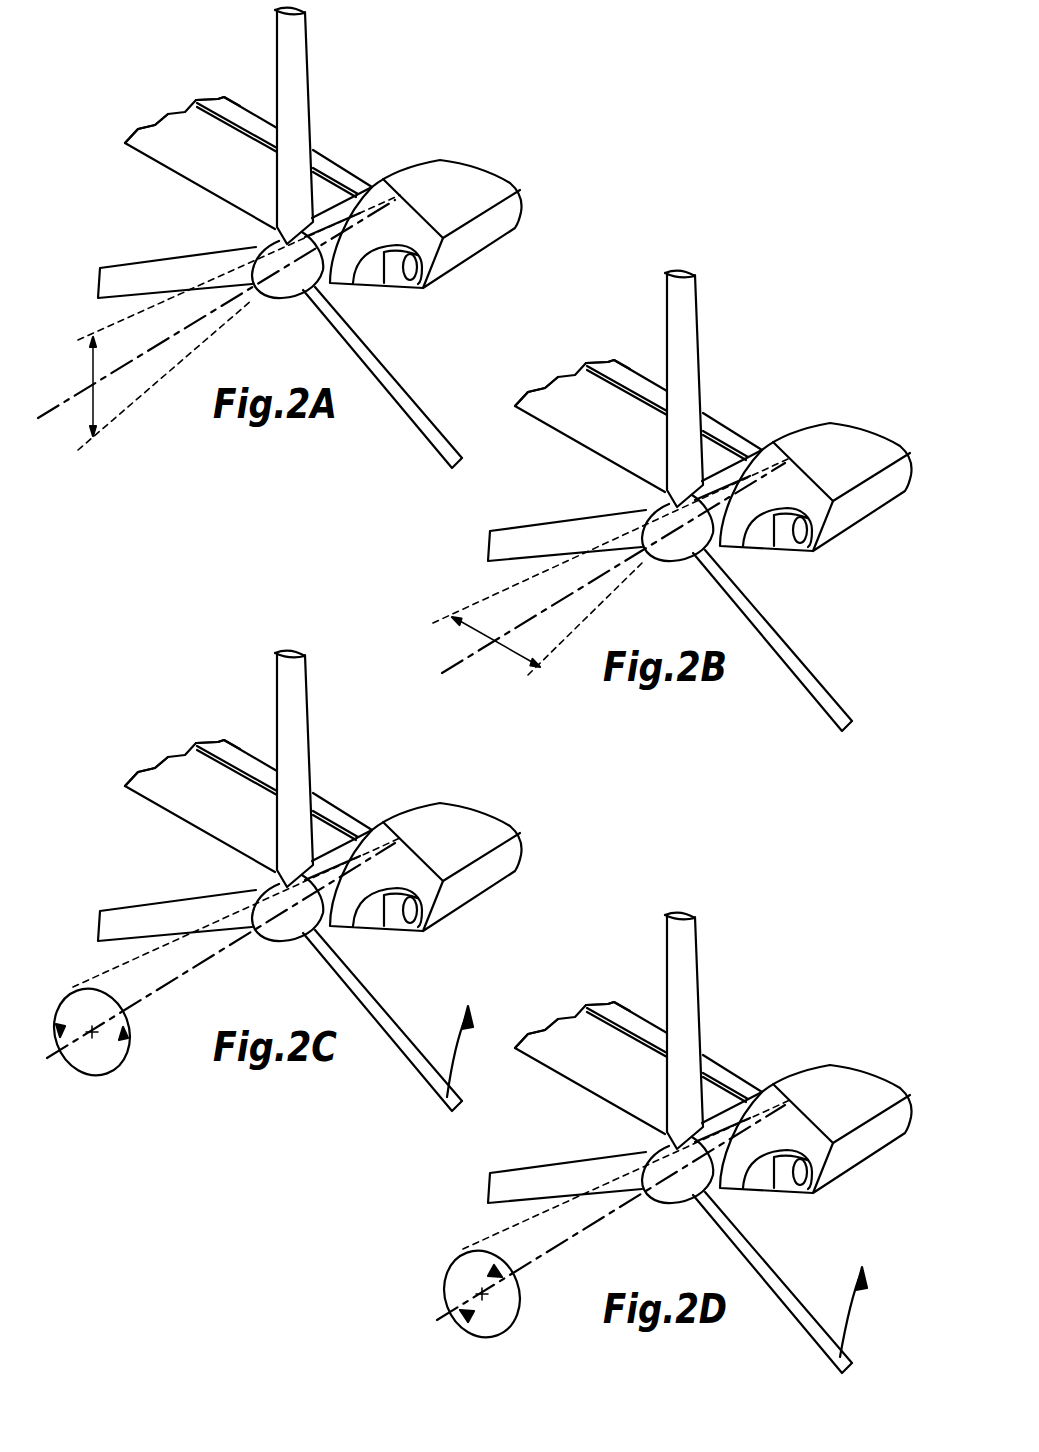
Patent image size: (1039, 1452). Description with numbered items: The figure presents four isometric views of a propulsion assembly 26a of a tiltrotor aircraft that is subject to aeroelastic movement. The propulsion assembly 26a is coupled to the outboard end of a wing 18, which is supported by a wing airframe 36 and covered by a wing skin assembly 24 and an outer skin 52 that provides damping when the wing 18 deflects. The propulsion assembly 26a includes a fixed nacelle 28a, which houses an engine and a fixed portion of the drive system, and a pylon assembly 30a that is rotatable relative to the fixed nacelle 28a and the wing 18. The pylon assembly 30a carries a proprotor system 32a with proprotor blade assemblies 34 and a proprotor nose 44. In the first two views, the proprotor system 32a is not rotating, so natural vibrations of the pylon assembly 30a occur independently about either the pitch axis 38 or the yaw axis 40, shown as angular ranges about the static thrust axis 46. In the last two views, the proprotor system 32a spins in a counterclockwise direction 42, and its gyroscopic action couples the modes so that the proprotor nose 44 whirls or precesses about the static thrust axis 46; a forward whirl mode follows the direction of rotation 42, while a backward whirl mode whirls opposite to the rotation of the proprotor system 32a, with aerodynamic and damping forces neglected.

In FIG. 2A, the wing 18 is at (189, 120).
In FIG. 2B, the wing 18 is at (638, 400).
In FIG. 2C, the wing 18 is at (248, 780).
In FIG. 2D, the wing 18 is at (638, 1042).
In FIG. 2A, the wing skin assembly 24 is at (218, 125).
In FIG. 2B, the wing skin assembly 24 is at (608, 348).
In FIG. 2C, the wing skin assembly 24 is at (218, 728).
In FIG. 2D, the wing skin assembly 24 is at (608, 990).
In FIG. 2A, the wing airframe 36 is at (154, 133).
In FIG. 2B, the wing airframe 36 is at (536, 367).
In FIG. 2C, the wing airframe 36 is at (146, 747).
In FIG. 2D, the wing airframe 36 is at (536, 1009).
In FIG. 2A, the outer skin 52 is at (247, 155).
In FIG. 2B, the outer skin 52 is at (667, 399).
In FIG. 2C, the outer skin 52 is at (277, 779).
In FIG. 2D, the outer skin 52 is at (667, 1041).
In FIG. 2A, the proprotor system 32a is at (276, 240).
In FIG. 2B, the proprotor system 32a is at (634, 389).
In FIG. 2C, the proprotor system 32a is at (244, 769).
In FIG. 2D, the proprotor system 32a is at (634, 1031).
In FIG. 2A, the proprotor nose 44 is at (251, 300).
In FIG. 2B, the proprotor nose 44 is at (677, 552).
In FIG. 2C, the proprotor nose 44 is at (287, 932).
In FIG. 2D, the proprotor nose 44 is at (677, 1194).
In FIG. 2A, the proprotor blade assembly 34 is at (126, 272).
In FIG. 2B, the proprotor blade assembly 34 is at (670, 597).
In FIG. 2C, the proprotor blade assembly 34 is at (280, 977).
In FIG. 2D, the proprotor blade assembly 34 is at (670, 1239).
In FIG. 2A, the pylon assembly 30a is at (335, 210).
In FIG. 2B, the pylon assembly 30a is at (728, 436).
In FIG. 2C, the pylon assembly 30a is at (338, 816).
In FIG. 2D, the pylon assembly 30a is at (728, 1078).
In FIG. 2A, the propulsion assembly 26a is at (453, 159).
In FIG. 2B, the propulsion assembly 26a is at (816, 450).
In FIG. 2C, the propulsion assembly 26a is at (426, 830).
In FIG. 2D, the propulsion assembly 26a is at (816, 1092).
In FIG. 2A, the fixed nacelle 28a is at (507, 182).
In FIG. 2B, the fixed nacelle 28a is at (879, 434).
In FIG. 2C, the fixed nacelle 28a is at (489, 814).
In FIG. 2D, the fixed nacelle 28a is at (879, 1076).
In FIG. 2A, the static thrust axis 46 is at (195, 323).
In FIG. 2B, the static thrust axis 46 is at (611, 566).
In FIG. 2C, the static thrust axis 46 is at (223, 948).
In FIG. 2D, the static thrust axis 46 is at (613, 1210).
In FIG. 2A, the pitch axis 38 is at (90, 373).
In FIG. 2B, the yaw axis 40 is at (470, 642).
In FIG. 2C, the counterclockwise direction 42 is at (281, 1037).
In FIG. 2D, the counterclockwise direction 42 is at (670, 1299).